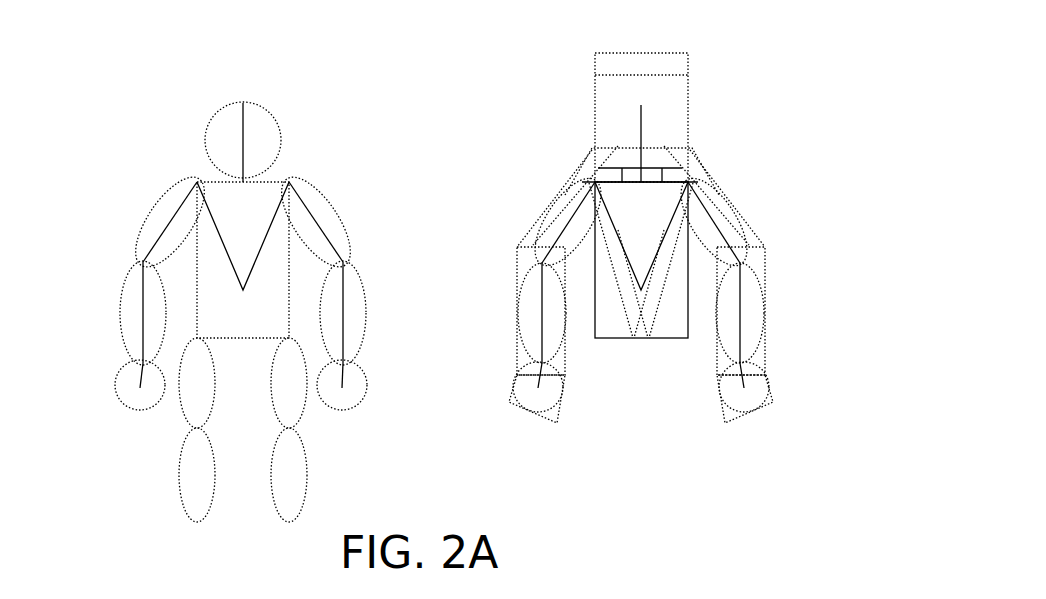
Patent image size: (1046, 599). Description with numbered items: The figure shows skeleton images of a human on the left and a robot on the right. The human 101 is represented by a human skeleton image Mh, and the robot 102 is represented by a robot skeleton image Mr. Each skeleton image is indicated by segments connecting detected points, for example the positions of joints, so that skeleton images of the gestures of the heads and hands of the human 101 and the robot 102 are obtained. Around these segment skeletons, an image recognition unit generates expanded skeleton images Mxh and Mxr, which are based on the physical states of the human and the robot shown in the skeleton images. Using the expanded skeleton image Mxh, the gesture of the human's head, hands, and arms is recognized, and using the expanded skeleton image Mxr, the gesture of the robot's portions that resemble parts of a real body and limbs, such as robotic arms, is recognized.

The human 101 is at (241, 80).
The robot 102 is at (646, 24).
The human skeleton image Mh is at (175, 217).
The expanded skeleton image Mxh is at (140, 236).
The robot skeleton image Mr is at (573, 200).
The expanded skeleton image Mxr is at (553, 213).